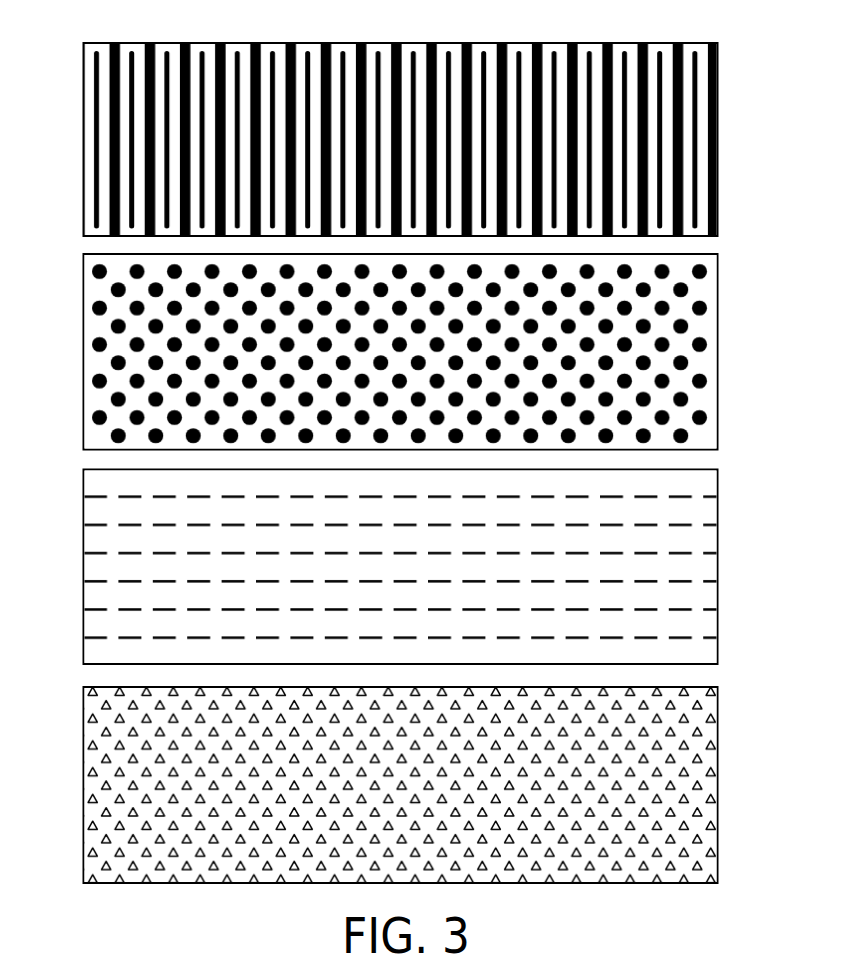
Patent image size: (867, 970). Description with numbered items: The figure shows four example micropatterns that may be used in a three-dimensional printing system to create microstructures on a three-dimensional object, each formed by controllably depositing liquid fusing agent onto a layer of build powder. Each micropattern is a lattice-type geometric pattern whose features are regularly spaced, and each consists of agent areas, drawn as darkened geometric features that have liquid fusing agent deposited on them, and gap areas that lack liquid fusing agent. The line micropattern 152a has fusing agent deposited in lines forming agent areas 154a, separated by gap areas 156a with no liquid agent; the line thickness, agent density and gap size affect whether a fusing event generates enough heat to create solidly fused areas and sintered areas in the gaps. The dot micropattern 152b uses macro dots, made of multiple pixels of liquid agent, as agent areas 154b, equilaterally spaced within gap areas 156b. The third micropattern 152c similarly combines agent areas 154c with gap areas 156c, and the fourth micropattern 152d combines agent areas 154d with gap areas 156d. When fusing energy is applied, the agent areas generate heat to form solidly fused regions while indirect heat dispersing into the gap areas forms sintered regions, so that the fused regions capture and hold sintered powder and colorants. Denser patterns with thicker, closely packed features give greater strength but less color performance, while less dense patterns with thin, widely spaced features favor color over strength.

The line micropattern 152a is at (84, 130).
The agent area 154a is at (694, 52).
The gap area 156a is at (592, 50).
The dot micropattern 152b is at (84, 352).
The agent area 154b is at (707, 273).
The gap area 156b is at (705, 327).
The micropattern 152c is at (84, 576).
The agent area 154c is at (683, 496).
The gap area 156c is at (690, 542).
The micropattern 152d is at (84, 788).
The agent area 154d is at (709, 715).
The gap area 156d is at (709, 760).